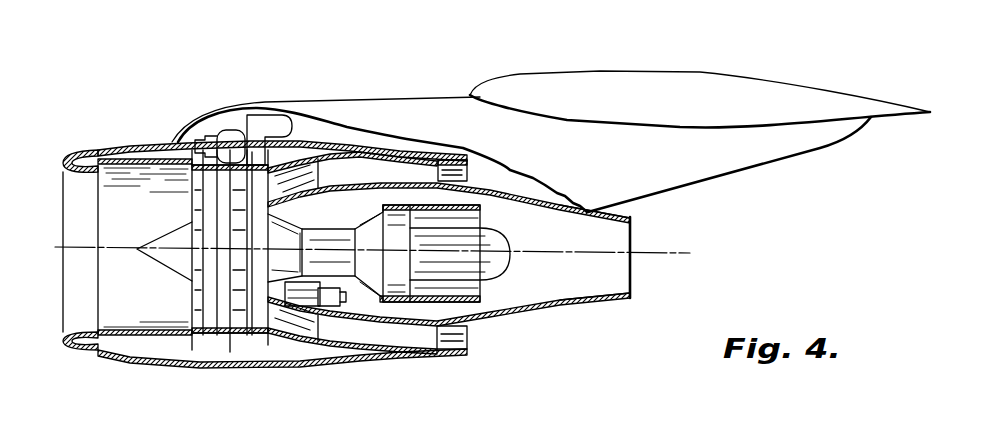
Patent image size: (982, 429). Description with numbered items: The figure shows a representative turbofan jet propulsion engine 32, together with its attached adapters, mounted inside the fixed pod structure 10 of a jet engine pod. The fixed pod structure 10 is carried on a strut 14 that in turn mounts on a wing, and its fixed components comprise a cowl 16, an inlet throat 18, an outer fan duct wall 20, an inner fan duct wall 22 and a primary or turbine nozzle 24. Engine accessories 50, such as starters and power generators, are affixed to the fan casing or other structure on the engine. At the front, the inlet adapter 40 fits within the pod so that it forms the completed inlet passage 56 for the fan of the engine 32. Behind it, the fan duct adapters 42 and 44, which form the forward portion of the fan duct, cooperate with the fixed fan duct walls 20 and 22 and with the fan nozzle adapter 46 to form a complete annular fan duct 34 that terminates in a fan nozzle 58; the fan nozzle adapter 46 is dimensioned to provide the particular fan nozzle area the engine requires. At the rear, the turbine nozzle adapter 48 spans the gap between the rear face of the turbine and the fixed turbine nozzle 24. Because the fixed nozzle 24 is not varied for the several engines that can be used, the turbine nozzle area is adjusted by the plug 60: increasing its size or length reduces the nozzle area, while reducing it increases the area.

The fixed pod structure 10 is at (140, 128).
The strut 14 is at (316, 105).
The cowl 16 is at (115, 151).
The inlet throat 18 is at (78, 176).
The outer fan duct wall 20 is at (360, 160).
The inner fan duct wall 22 is at (340, 183).
The turbine nozzle 24 is at (600, 283).
The turbofan jet propulsion engine 32 is at (320, 228).
The fan duct 34 is at (382, 340).
The inlet adapter 40 is at (137, 336).
The fan duct adapter 42 is at (299, 345).
The fan duct adapter 44 is at (287, 302).
The fan nozzle adapter 46 is at (440, 155).
The turbine nozzle adapter 48 is at (453, 158).
The engine accessories 50 is at (237, 124).
The inlet passage 56 is at (122, 228).
The fan nozzle 58 is at (470, 172).
The plug 60 is at (492, 274).